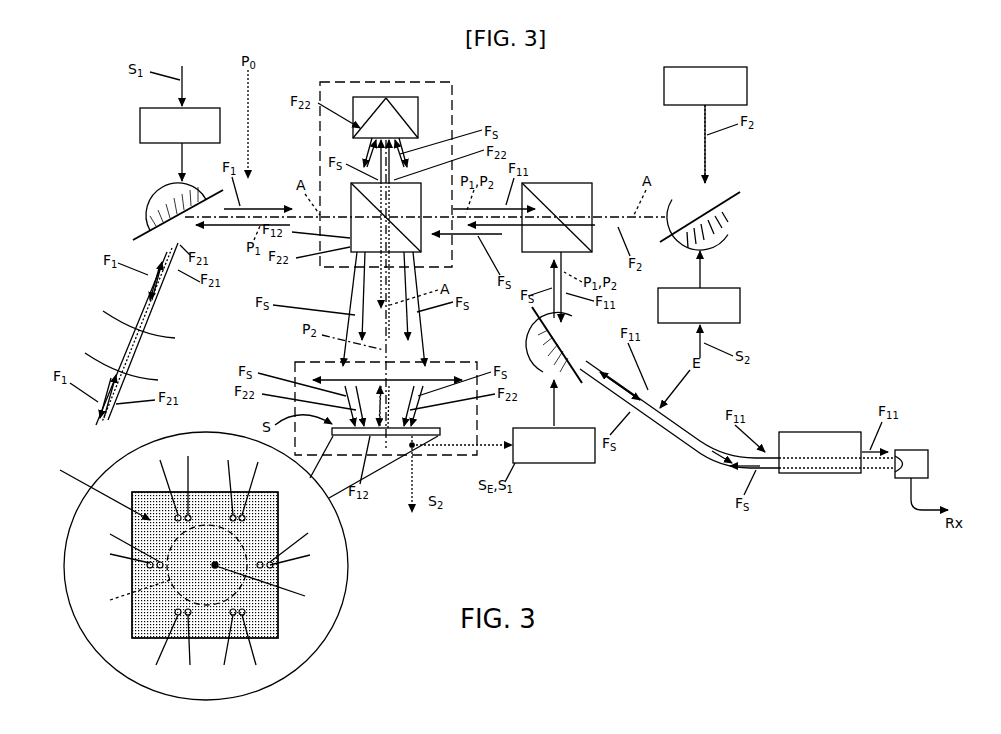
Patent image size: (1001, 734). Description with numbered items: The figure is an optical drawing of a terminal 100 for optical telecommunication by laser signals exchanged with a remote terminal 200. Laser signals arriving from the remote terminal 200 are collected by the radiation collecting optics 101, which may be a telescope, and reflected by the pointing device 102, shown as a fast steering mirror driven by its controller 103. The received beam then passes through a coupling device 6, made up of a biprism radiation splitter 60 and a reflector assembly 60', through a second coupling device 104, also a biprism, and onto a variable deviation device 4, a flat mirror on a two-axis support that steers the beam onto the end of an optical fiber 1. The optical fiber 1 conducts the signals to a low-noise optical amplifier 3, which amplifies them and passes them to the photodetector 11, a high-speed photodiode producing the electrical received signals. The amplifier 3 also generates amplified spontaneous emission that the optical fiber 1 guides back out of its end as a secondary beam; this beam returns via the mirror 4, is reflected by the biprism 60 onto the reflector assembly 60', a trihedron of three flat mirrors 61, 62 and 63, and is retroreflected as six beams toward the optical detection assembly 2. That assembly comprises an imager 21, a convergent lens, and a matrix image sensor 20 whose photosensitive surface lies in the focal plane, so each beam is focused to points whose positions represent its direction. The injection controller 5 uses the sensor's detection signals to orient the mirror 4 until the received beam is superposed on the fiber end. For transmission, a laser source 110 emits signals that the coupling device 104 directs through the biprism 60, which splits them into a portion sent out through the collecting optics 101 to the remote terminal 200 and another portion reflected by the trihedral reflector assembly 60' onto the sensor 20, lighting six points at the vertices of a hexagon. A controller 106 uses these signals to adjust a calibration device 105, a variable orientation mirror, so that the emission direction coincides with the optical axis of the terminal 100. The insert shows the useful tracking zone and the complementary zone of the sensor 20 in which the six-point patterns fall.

The optical fiber 1 is at (674, 436).
The optical detection assembly 2 is at (463, 362).
The optical amplifier 3 is at (836, 473).
The variable deviation device 4 is at (530, 312).
The injection controller 5 is at (580, 463).
The coupling device 6 is at (452, 115).
The photodetector 11 is at (919, 450).
The matrix image sensor 20 is at (440, 429).
The imager 21 is at (430, 378).
The radiation splitter 60 is at (351, 203).
The reflector assembly 60' is at (417, 96).
The flat mirror 61 is at (358, 118).
The flat mirror 62 is at (410, 118).
The flat mirror 63 is at (390, 102).
The terminal 100 is at (604, 566).
The radiation collecting optics 101 is at (130, 345).
The pointing device 102 is at (148, 233).
The controller 103 is at (140, 120).
The coupling device 104 is at (571, 183).
The calibration device 105 is at (730, 195).
The controller 106 is at (740, 302).
The source 110 is at (747, 78).
The remote terminal 200 is at (198, 566).